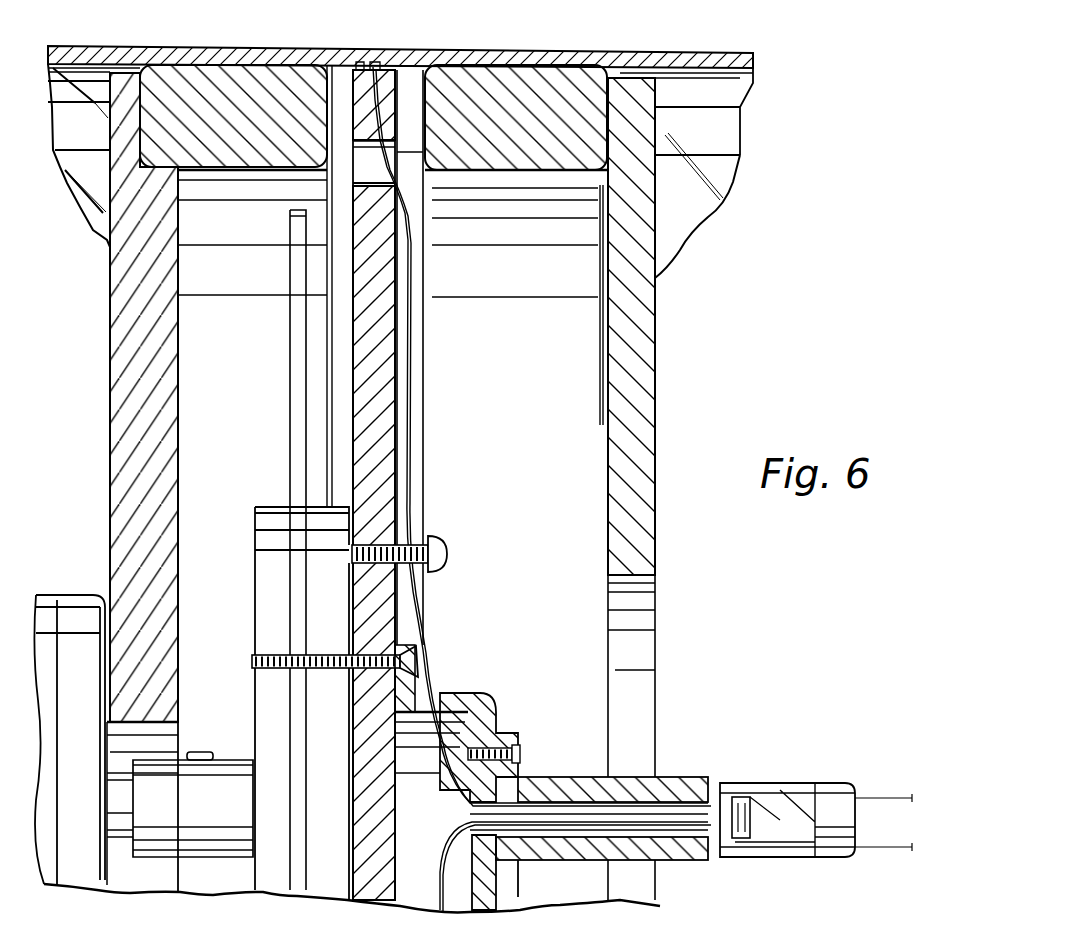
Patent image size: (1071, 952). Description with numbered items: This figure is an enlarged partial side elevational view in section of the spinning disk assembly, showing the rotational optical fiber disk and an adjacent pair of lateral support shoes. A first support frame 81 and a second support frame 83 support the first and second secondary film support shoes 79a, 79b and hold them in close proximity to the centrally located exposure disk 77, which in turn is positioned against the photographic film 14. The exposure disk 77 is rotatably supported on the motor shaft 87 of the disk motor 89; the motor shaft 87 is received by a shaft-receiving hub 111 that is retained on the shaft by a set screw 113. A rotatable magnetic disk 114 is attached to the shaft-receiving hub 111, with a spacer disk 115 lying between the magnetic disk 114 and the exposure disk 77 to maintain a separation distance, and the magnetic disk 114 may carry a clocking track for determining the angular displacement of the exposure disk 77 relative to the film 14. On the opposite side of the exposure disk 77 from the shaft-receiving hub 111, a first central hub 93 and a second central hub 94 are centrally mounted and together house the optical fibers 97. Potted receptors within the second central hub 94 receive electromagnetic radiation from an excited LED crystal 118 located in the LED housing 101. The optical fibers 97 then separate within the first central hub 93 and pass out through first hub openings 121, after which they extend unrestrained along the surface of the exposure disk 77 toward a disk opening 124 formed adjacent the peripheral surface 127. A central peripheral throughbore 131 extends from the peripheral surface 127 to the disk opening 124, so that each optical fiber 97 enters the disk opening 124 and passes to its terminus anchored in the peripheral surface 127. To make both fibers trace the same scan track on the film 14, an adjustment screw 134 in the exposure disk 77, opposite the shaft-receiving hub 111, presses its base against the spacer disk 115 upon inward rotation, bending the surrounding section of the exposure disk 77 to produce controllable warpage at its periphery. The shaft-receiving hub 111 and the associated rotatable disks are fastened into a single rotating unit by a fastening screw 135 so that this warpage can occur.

The photographic film 14 is at (755, 58).
The first secondary film support shoe 79a is at (221, 70).
The second secondary film support shoe 79b is at (525, 78).
The peripheral surface 127 is at (360, 64).
The central peripheral throughbore 131 is at (383, 65).
The disk opening 124 is at (355, 152).
The rotatable magnetic disk 114 is at (292, 235).
The exposure disk 77 is at (385, 353).
The optical fibers 97 is at (410, 415).
The first support frame 81 is at (648, 320).
The second support frame 83 is at (122, 477).
The spacer disk 115 is at (322, 528).
The adjustment screw 134 is at (447, 548).
The disk motor 89 is at (65, 612).
The fastening screw 135 is at (423, 653).
The first hub openings 121 is at (442, 697).
The first central hub 93 is at (487, 698).
The second central hub 94 is at (558, 782).
The shaft-receiving hub 111 is at (267, 707).
The set screw 113 is at (208, 742).
The motor shaft 87 is at (120, 830).
The LED housing 101 is at (845, 760).
The LED crystal 118 is at (773, 840).